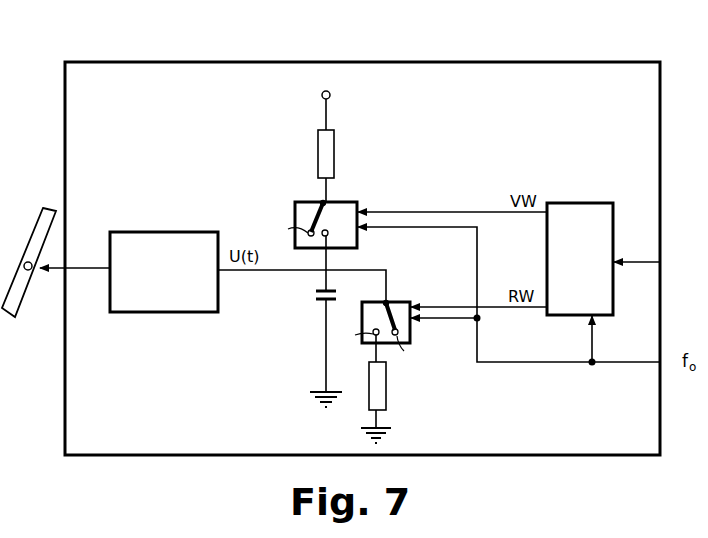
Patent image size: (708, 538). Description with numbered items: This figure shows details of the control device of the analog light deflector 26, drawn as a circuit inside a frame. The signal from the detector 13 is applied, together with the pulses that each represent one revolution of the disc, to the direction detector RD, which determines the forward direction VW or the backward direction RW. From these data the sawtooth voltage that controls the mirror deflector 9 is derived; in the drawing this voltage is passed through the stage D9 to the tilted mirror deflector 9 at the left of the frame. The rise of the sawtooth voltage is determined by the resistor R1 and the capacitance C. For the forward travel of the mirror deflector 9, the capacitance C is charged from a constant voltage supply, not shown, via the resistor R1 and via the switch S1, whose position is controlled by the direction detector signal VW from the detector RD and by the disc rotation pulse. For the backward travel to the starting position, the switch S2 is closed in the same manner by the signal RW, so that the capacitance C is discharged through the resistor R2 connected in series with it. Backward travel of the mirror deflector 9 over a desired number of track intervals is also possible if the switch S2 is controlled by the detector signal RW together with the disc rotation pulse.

The analog light deflector 26 is at (150, 78).
The mirror deflector 9 is at (12, 302).
The detector 13 is at (660, 262).
The driver D9 is at (148, 250).
The resistor R1 is at (335, 150).
The resistor R2 is at (388, 395).
The switch S1 is at (347, 208).
The switch S2 is at (402, 310).
The capacitance C is at (316, 294).
The direction detector RD is at (598, 240).